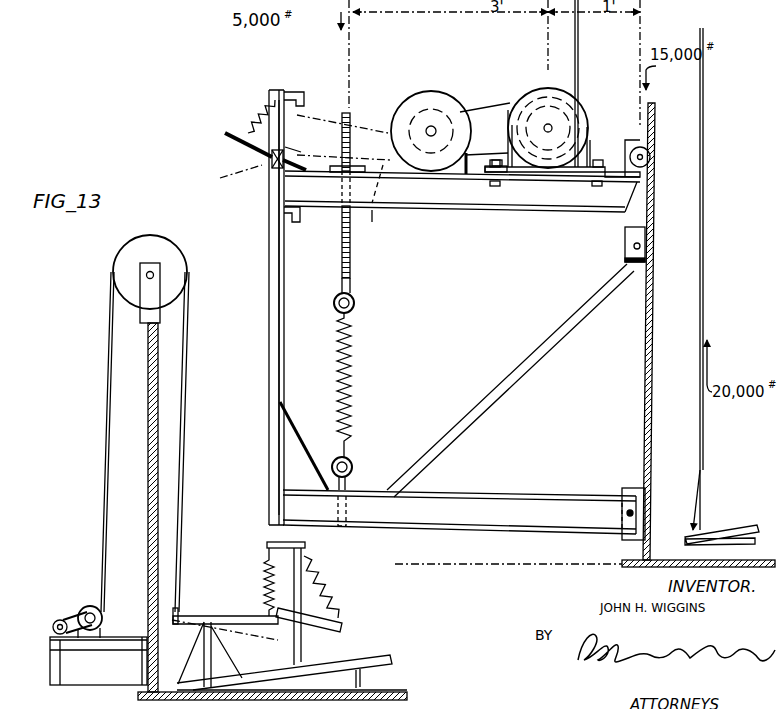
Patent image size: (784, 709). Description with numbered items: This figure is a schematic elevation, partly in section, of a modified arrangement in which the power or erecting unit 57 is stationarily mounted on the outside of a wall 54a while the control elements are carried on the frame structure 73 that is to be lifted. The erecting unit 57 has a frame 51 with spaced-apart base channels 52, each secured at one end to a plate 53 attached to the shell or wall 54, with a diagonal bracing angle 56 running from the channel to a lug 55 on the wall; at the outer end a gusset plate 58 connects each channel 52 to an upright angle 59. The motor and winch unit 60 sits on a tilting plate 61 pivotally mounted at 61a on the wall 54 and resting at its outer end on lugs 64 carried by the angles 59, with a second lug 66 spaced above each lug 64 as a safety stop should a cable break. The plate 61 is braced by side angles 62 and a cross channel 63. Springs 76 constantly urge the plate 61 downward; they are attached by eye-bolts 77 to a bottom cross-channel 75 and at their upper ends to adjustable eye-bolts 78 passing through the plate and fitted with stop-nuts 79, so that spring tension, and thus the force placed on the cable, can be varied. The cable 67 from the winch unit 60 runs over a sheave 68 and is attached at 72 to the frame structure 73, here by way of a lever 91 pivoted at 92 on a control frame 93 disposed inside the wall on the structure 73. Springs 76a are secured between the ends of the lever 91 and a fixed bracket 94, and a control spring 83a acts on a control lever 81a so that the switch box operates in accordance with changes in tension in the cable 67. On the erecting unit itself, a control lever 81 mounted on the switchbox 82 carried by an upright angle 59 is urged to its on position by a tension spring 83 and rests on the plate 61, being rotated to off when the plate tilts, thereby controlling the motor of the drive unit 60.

The frame 51 is at (266, 323).
The base channel 52 is at (558, 492).
The plate 53 is at (632, 488).
The shell or wall 54 is at (652, 373).
The wall 54a is at (148, 455).
The lug 55 is at (630, 270).
The diagonal bracing angle 56 is at (532, 362).
The erecting or power unit 57 is at (48, 650).
The gusset plate 58 is at (294, 428).
The upright angle 59 is at (284, 305).
The motor and winch unit 60 is at (518, 100).
The tilting plate 61 is at (614, 172).
The pivot 61a is at (642, 157).
The side angle 62 is at (488, 210).
The cross channel 63 is at (400, 200).
The lug 64 is at (295, 213).
The second lug 66 is at (297, 104).
The cable 67 is at (186, 403).
The idler sheave 68 is at (172, 270).
The attachment point 72 is at (693, 530).
The frame structure 73 is at (392, 657).
The bottom cross-channel 75 is at (350, 508).
The spring 76 is at (350, 375).
The spring 76a is at (263, 585).
The eye-bolt 77 is at (352, 467).
The adjustable eye-bolt 78 is at (354, 304).
The stop-nut 79 is at (336, 178).
The control lever 81 is at (228, 143).
The control lever 81a is at (310, 632).
The switchbox 82 is at (273, 172).
The tension spring 83 is at (250, 115).
The control spring 83a is at (330, 592).
The lever 91 is at (181, 614).
The pivot 92 is at (210, 630).
The control frame 93 is at (240, 668).
The fixed bracket 94 is at (306, 545).